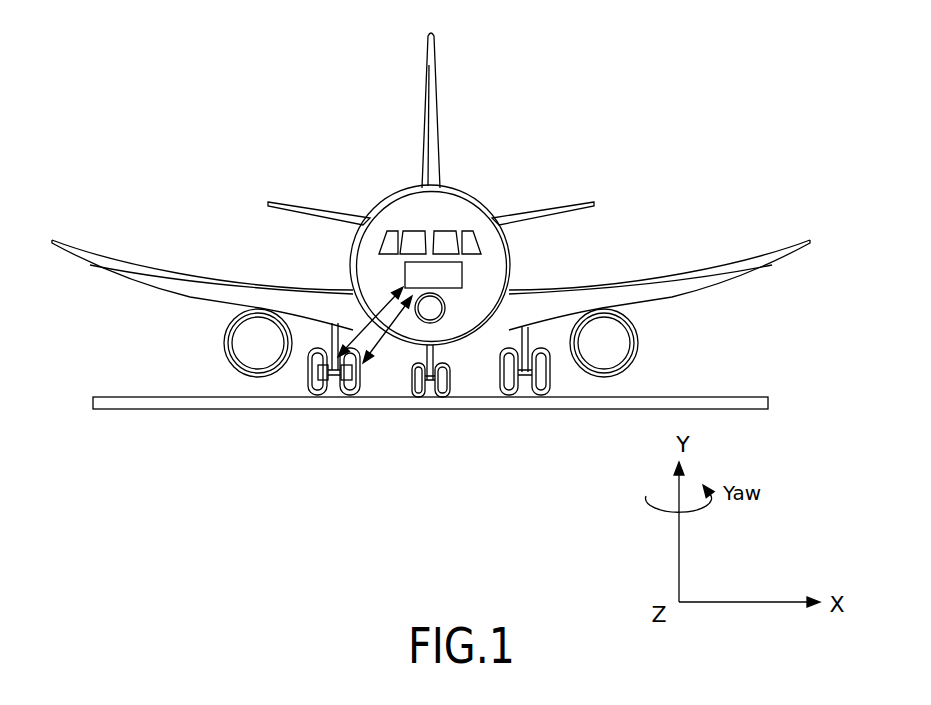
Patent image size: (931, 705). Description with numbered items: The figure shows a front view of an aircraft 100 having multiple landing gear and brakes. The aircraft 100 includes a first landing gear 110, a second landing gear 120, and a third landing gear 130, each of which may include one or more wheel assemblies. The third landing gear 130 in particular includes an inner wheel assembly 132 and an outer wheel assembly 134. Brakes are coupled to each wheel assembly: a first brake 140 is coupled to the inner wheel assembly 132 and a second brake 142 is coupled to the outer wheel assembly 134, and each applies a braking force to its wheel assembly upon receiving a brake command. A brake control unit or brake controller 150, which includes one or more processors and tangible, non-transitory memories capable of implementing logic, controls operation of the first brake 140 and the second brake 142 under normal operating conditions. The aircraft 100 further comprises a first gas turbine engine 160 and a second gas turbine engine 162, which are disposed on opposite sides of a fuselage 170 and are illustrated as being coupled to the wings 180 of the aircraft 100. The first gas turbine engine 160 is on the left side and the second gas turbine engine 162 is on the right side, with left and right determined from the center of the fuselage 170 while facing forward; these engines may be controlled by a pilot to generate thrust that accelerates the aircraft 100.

The aircraft 100 is at (298, 115).
The first landing gear 110 is at (552, 380).
The second landing gear 120 is at (450, 383).
The third landing gear 130 is at (294, 378).
The inner wheel assembly 132 is at (343, 380).
The outer wheel assembly 134 is at (313, 390).
The first brake 140 is at (356, 374).
The second brake 142 is at (318, 387).
The brake controller 150 is at (462, 277).
The first gas turbine engine 160 is at (637, 342).
The second gas turbine engine 162 is at (232, 358).
The fuselage 170 is at (455, 193).
The wings 180 is at (207, 290).